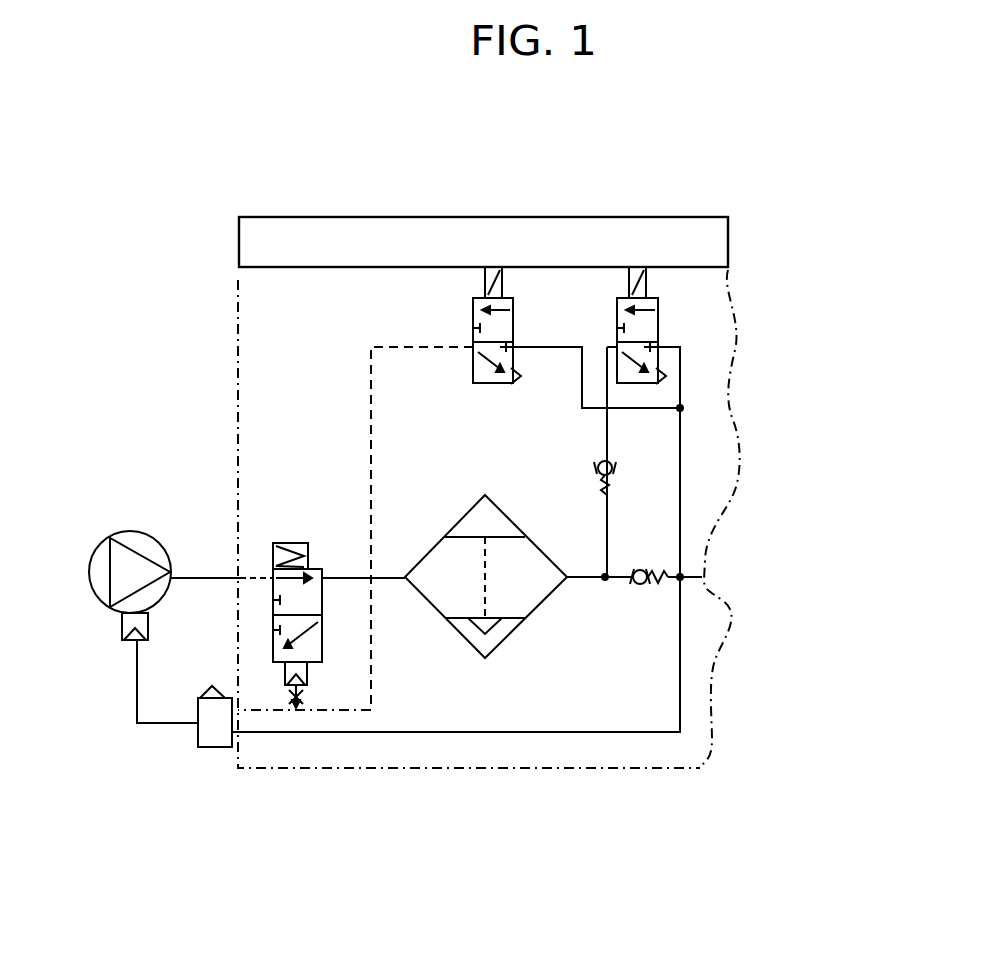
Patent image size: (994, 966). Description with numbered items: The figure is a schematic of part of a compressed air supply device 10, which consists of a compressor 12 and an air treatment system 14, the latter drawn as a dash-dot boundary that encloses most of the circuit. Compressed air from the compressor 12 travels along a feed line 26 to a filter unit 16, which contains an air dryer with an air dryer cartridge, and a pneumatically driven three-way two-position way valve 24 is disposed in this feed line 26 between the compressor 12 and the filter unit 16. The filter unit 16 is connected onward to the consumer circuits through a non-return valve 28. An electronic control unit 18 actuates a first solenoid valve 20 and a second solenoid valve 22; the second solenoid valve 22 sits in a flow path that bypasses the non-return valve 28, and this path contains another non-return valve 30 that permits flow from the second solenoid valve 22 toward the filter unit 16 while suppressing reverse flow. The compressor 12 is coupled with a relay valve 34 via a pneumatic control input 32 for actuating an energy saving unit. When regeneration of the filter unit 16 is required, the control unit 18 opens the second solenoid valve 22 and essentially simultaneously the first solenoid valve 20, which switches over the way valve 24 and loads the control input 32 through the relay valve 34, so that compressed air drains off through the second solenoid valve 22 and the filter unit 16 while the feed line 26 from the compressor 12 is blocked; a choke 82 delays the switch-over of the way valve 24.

The compressed air supply device 10 is at (252, 845).
The compressor 12 is at (93, 563).
The air treatment system 14 is at (582, 770).
The filter unit 16 is at (535, 613).
The electronic control unit 18 is at (633, 226).
The first solenoid valve 20 is at (475, 314).
The second solenoid valve 22 is at (660, 316).
The 3/2 way valve 24 is at (322, 650).
The feed line 26 is at (205, 578).
The non-return valve 28 is at (643, 588).
The non-return valve 30 is at (625, 467).
The pneumatic control input 32 is at (122, 625).
The relay valve 34 is at (210, 748).
The choke 82 is at (312, 705).